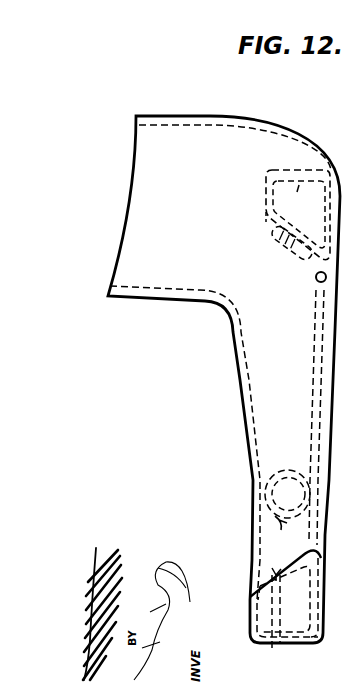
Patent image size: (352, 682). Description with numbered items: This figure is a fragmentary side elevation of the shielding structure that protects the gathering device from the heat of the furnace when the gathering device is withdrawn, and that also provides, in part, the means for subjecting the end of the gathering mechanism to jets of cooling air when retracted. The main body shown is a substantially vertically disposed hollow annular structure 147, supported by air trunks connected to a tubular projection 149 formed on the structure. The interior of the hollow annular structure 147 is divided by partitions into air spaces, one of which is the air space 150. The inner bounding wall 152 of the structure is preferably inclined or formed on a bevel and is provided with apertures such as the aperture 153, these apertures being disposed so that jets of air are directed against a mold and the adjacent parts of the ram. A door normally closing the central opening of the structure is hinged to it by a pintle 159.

The hollow annular structure 147 is at (267, 420).
The tubular projection 149 is at (216, 126).
The air space 150 is at (314, 157).
The inner bounding wall 152 is at (266, 220).
The aperture 153 is at (285, 242).
The pintle 159 is at (317, 283).